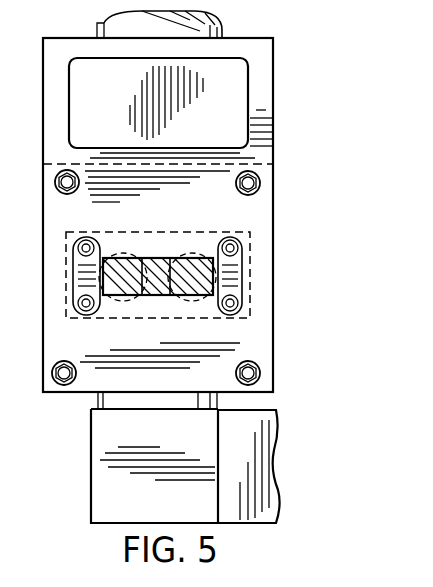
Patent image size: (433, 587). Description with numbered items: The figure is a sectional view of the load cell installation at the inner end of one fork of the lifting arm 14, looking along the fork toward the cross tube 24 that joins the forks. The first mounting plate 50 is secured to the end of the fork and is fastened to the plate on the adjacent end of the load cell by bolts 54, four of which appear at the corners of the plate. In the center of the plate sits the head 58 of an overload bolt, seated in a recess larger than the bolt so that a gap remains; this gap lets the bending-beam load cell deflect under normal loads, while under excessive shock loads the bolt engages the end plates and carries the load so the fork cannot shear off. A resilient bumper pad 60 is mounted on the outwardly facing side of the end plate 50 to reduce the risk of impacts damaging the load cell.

The lifting arm 14 is at (258, 422).
The cross tube 24 is at (112, 29).
The first mounting plate 50 is at (50, 329).
The bolts 54 is at (256, 189).
The head 58 is at (193, 256).
The resilient bumper pad 60 is at (85, 86).